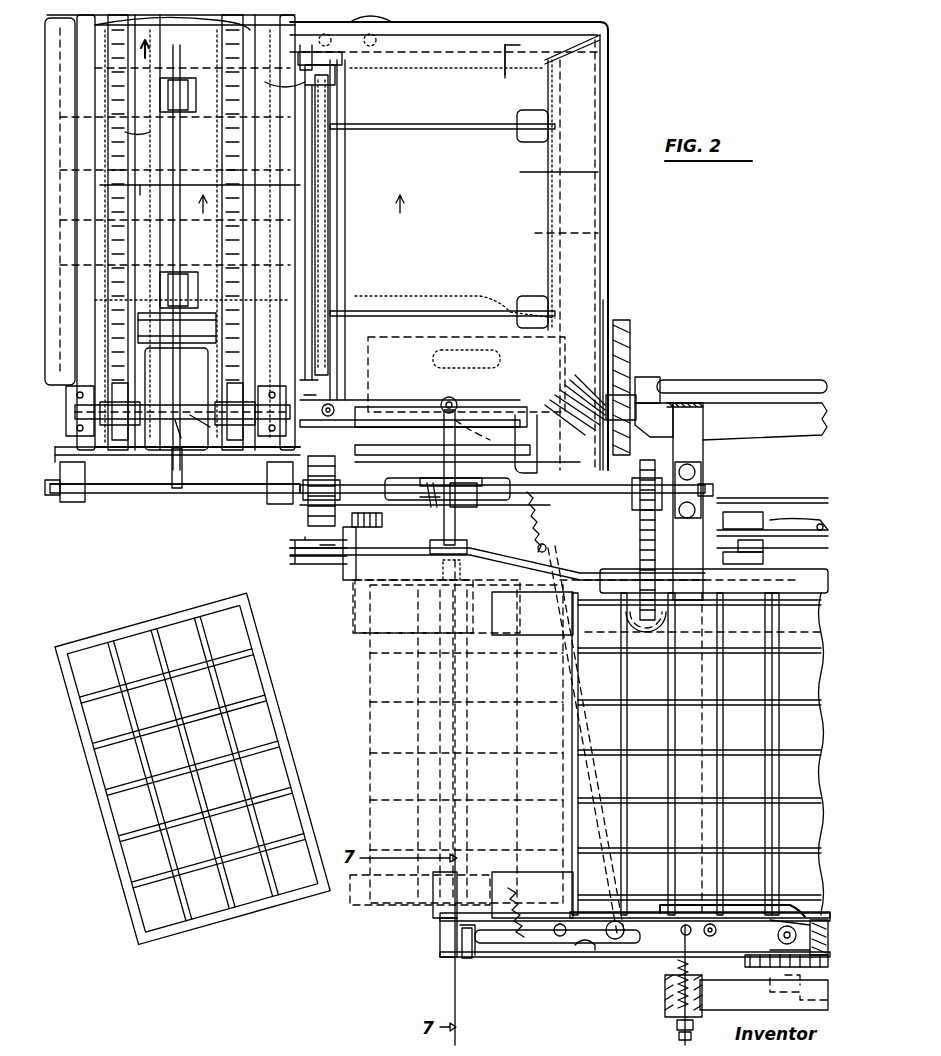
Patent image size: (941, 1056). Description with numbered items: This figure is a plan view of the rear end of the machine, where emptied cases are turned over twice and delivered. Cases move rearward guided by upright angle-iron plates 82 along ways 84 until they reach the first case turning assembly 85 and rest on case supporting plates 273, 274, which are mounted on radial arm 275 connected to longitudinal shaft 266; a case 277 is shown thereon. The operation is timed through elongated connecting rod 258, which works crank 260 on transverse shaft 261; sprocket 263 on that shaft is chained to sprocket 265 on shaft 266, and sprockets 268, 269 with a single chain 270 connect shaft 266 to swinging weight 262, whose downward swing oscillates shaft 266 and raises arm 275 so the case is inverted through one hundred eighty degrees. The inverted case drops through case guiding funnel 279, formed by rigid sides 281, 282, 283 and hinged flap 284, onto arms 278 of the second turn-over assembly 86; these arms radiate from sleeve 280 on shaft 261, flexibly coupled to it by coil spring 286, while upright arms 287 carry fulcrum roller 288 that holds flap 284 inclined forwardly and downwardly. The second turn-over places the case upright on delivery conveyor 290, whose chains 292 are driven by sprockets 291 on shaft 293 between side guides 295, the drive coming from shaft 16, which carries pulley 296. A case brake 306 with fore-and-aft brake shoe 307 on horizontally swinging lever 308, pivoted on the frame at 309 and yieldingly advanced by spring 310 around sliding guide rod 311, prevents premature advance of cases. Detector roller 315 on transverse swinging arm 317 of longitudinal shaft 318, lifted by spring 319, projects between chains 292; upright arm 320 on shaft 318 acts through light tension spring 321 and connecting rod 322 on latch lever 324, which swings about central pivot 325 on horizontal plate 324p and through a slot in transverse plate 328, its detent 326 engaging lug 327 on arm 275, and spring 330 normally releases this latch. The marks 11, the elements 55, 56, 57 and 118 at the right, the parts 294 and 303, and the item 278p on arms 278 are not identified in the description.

The section line 11 is at (303, 212).
The shaft 16 is at (730, 378).
The rail 55 is at (790, 505).
The slide block 56 is at (750, 512).
The frame bar 57 is at (808, 573).
The angle irons 82 is at (545, 640).
The ways or plates 84 is at (505, 645).
The case turning mechanism 85 is at (481, 534).
The second turn over assembly 86 is at (468, 216).
The guide plate 118 is at (790, 520).
The connecting rod 258 is at (575, 571).
The crank 260 is at (310, 568).
The transverse shaft 261 is at (345, 575).
The weight 262 is at (656, 655).
The sprocket 263 is at (382, 518).
The sprocket 265 is at (302, 507).
The longitudinal shaft 266 is at (215, 490).
The sprocket 268 is at (690, 445).
The sprocket 269 is at (627, 581).
The chain 270 is at (655, 533).
The case supporting plate 273 is at (355, 905).
The case supporting plate 274 is at (355, 612).
The radial arm 275 is at (451, 395).
The case 277 is at (105, 826).
The arm 278 is at (420, 125).
The latch tab 278p is at (340, 150).
The case guiding funnel 279 is at (543, 171).
The sleeve 280 is at (360, 177).
The rigid side 281 is at (495, 70).
The rigid side 282 is at (608, 108).
The rigid side 283 is at (540, 420).
The swinging transverse side 284 is at (350, 263).
The coil spring 286 is at (337, 387).
The offset arm 287 is at (330, 82).
The transverse fulcrum roller 288 is at (348, 232).
The delivery conveyor 290 is at (148, 24).
The sprocket 291 is at (205, 400).
The chain 292 is at (140, 198).
The conveyor sprocket shaft 293 is at (165, 443).
The roller 294 is at (205, 372).
The side guide 295 is at (48, 162).
The pulley 296 is at (633, 357).
The lever 303 is at (428, 500).
The case brake 306 is at (655, 940).
The brake shoe 307 is at (635, 910).
The lever 308 is at (735, 970).
The pivot 309 is at (793, 922).
The spring 310 is at (670, 980).
The sliding guide rod 311 is at (675, 1003).
The detector roller 315 is at (200, 105).
The transverse swinging arm 317 is at (170, 158).
The longitudinal shaft 318 is at (115, 490).
The spring 319 is at (190, 443).
The upright arm 320 is at (540, 485).
The light tension spring 321 is at (546, 545).
The connecting rod 322 is at (605, 840).
The latch lever 324 is at (583, 953).
The horizontal plate 324p is at (440, 935).
The central pivot 325 is at (548, 943).
The detent 326 is at (438, 948).
The lug 327 is at (435, 978).
The transverse plate 328 is at (470, 958).
The spring 330 is at (525, 885).